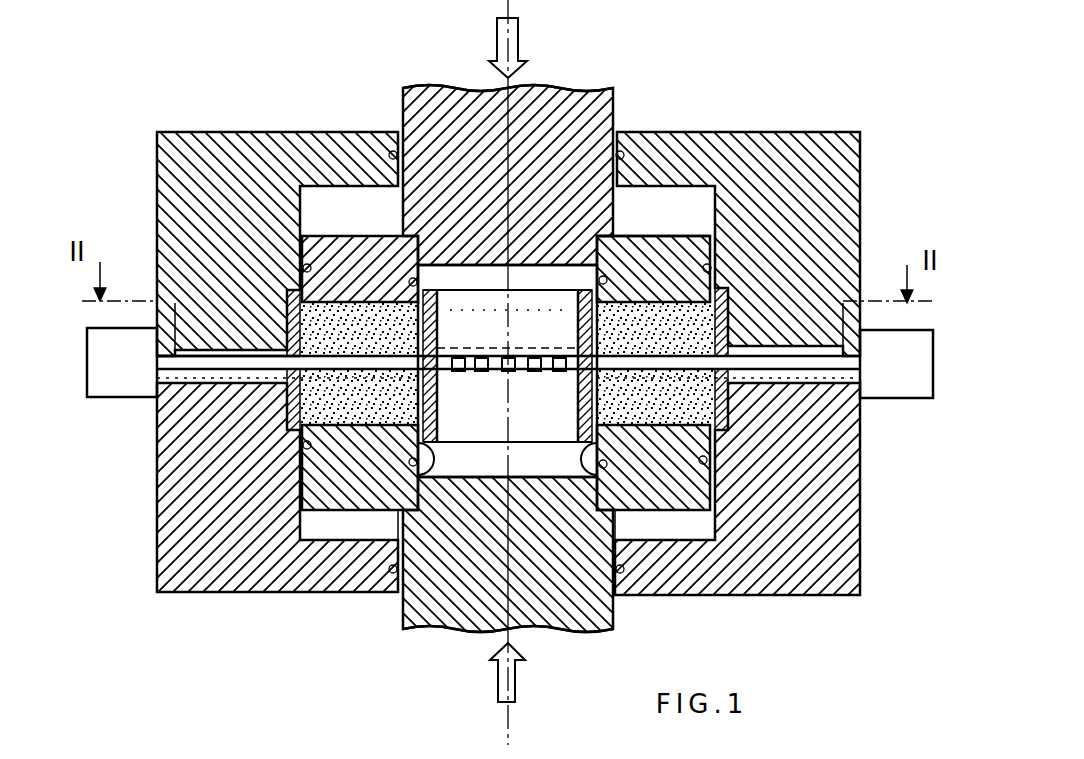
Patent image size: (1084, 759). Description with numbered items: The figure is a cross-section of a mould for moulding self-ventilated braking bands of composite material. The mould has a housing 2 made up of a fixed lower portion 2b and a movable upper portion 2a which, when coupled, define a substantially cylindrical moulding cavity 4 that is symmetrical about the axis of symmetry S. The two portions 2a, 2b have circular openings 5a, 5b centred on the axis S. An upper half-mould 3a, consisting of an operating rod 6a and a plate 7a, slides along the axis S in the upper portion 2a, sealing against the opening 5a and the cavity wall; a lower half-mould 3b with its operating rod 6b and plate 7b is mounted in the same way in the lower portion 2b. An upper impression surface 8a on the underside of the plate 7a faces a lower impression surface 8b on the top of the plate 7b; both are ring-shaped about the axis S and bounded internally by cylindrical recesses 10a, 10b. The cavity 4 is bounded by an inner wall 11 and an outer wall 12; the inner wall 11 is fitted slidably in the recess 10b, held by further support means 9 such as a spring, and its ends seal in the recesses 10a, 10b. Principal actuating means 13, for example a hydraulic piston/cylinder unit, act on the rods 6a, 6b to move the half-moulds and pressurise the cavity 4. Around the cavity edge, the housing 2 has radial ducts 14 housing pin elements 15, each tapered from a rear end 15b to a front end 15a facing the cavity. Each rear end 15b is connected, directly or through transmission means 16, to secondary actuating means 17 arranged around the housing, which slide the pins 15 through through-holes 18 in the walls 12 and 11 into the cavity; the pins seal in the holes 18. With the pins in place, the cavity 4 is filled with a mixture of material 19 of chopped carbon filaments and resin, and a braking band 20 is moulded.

The housing 2 is at (542, 344).
The movable upper portion 2a is at (780, 136).
The fixed lower portion 2b is at (853, 565).
The upper half-mould 3a is at (600, 128).
The lower half-mould 3b is at (577, 613).
The moulding cavity 4 is at (730, 302).
The circular opening 5a is at (398, 132).
The circular opening 5b is at (400, 595).
The operating rod 6a is at (540, 108).
The operating rod 6b is at (452, 612).
The plate 7a is at (660, 258).
The plate 7b is at (705, 510).
The upper impression surface 8a is at (290, 300).
The lower impression surface 8b is at (740, 384).
The further support means 9 is at (443, 467).
The cylindrical recess 10a is at (543, 263).
The cylindrical recess 10b is at (528, 462).
The inner wall 11 is at (439, 333).
The outer wall 12 is at (730, 335).
The principal actuating means 13 is at (518, 44).
The ducts 14 is at (157, 395).
The pin elements 15 is at (305, 398).
The front end 15a is at (437, 372).
The rear end 15b is at (240, 395).
The transmission means 16 is at (185, 290).
The secondary actuating means 17 is at (105, 362).
The through-holes 18 is at (295, 405).
The mixture of material 19 is at (635, 300).
The braking band 20 is at (340, 300).
The axis of symmetry S is at (508, 713).